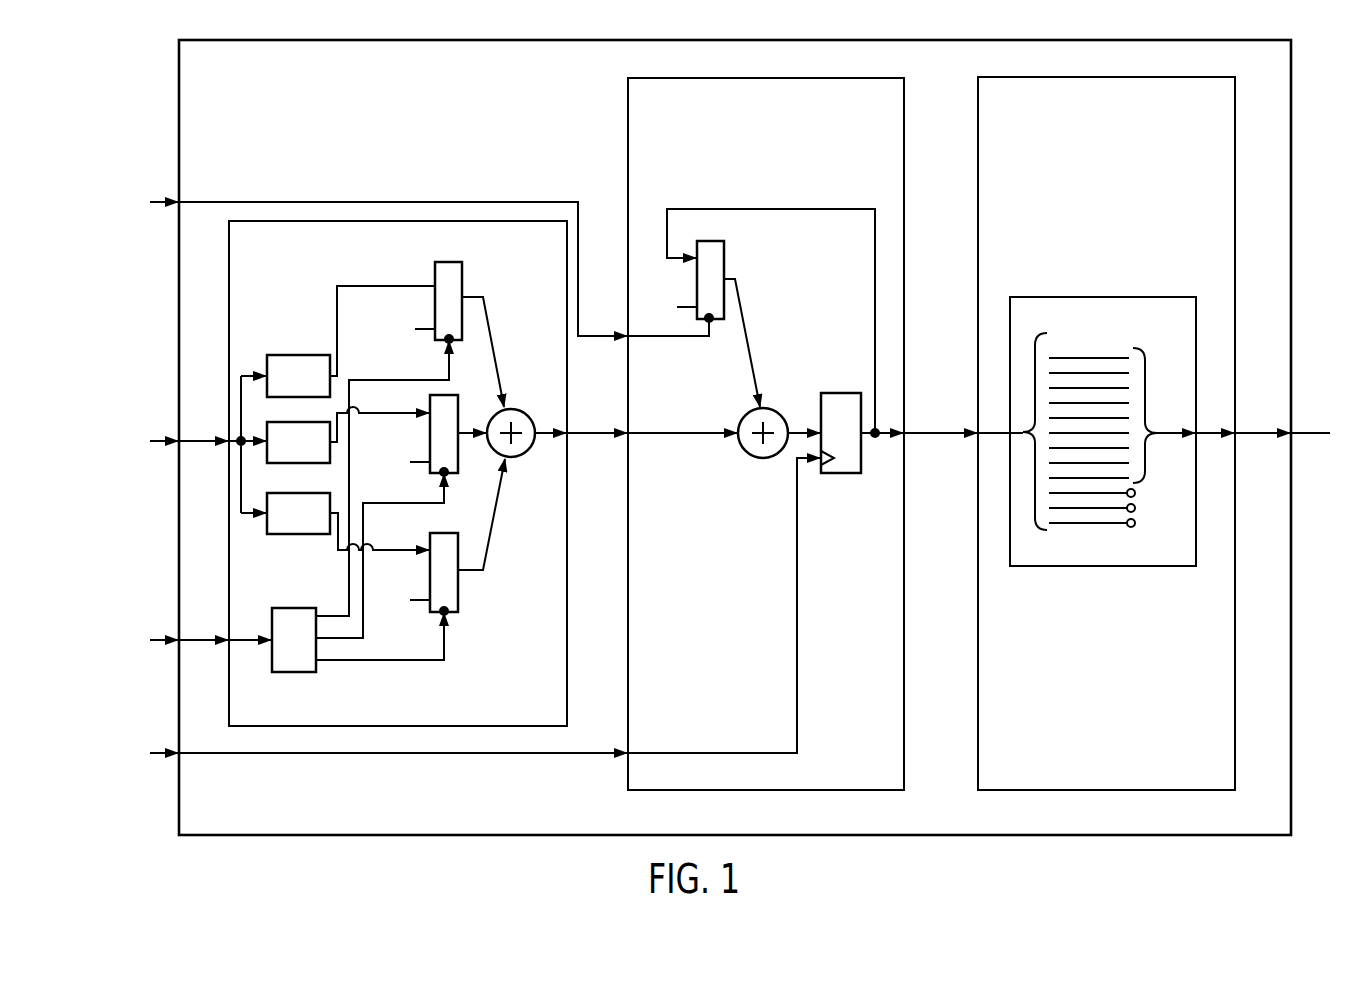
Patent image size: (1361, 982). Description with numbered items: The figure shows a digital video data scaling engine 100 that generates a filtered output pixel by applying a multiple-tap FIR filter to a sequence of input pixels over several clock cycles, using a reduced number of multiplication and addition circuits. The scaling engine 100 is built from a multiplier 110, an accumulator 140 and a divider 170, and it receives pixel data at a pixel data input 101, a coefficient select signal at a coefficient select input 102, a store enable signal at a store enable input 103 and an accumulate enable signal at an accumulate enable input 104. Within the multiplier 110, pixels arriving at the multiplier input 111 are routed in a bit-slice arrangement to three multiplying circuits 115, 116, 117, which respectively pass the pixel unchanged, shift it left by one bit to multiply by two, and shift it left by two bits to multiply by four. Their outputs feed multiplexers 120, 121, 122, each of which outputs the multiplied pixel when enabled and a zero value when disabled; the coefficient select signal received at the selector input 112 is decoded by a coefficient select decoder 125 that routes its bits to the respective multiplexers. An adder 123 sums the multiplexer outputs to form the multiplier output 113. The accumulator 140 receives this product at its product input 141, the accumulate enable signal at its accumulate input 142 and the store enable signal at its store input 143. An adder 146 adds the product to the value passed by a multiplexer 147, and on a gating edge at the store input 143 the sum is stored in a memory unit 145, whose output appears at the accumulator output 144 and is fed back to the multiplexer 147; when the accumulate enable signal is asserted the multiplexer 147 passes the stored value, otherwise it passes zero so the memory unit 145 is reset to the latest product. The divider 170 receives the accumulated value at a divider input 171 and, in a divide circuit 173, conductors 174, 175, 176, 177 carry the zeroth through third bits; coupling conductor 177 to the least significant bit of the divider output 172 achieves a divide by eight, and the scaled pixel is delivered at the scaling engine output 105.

The video scaling engine 100 is at (360, 852).
The pixel data input 101 is at (176, 437).
The coefficient select input 102 is at (176, 636).
The store enable input 103 is at (176, 749).
The accumulate enable input 104 is at (176, 198).
The scaling engine output 105 is at (1299, 428).
The multiplier 110 is at (568, 641).
The multiplier input 111 is at (226, 437).
The selector input 112 is at (226, 636).
The multiplier output 113 is at (572, 430).
The multiplying circuit 115 is at (282, 536).
The multiplying circuit 116 is at (287, 466).
The multiplying circuit 117 is at (288, 354).
The multiplexer 120 is at (440, 533).
The multiplexer 121 is at (459, 405).
The multiplexer 122 is at (453, 261).
The adder 123 is at (520, 408).
The coefficient select decoder 125 is at (290, 673).
The accumulator 140 is at (842, 78).
The product input 141 is at (621, 429).
The accumulate input 142 is at (620, 332).
The store input 143 is at (621, 748).
The accumulator output 144 is at (909, 428).
The memory unit 145 is at (826, 393).
The adder 146 is at (756, 460).
The multiplexer 147 is at (718, 241).
The divider 170 is at (1057, 76).
The divider input 171 is at (971, 428).
The divider output 172 is at (1243, 428).
The divide circuit 173 is at (1032, 297).
The conductor 174 is at (1136, 525).
The conductor 175 is at (1136, 508).
The conductor 176 is at (1136, 492).
The conductor 177 is at (1043, 480).